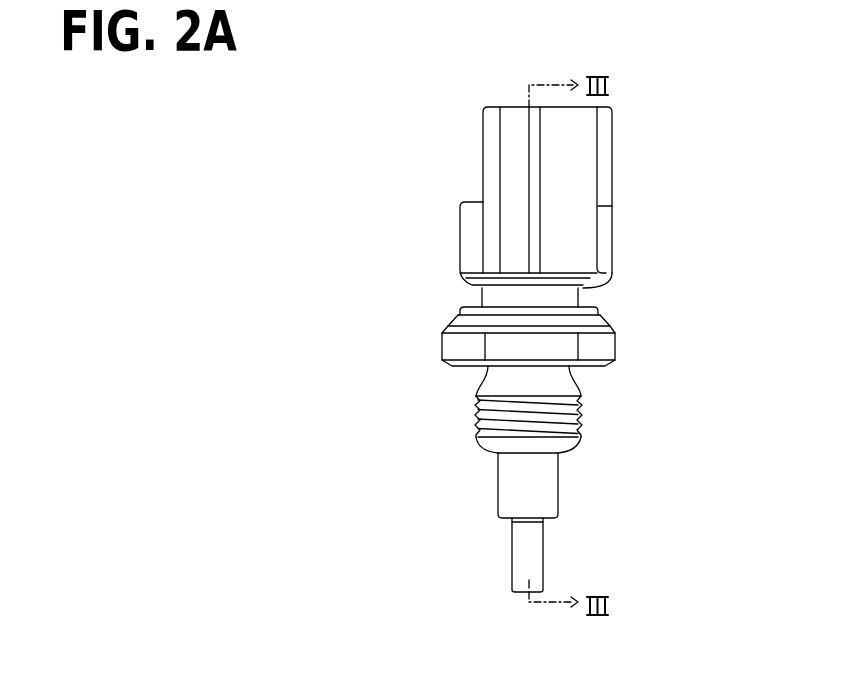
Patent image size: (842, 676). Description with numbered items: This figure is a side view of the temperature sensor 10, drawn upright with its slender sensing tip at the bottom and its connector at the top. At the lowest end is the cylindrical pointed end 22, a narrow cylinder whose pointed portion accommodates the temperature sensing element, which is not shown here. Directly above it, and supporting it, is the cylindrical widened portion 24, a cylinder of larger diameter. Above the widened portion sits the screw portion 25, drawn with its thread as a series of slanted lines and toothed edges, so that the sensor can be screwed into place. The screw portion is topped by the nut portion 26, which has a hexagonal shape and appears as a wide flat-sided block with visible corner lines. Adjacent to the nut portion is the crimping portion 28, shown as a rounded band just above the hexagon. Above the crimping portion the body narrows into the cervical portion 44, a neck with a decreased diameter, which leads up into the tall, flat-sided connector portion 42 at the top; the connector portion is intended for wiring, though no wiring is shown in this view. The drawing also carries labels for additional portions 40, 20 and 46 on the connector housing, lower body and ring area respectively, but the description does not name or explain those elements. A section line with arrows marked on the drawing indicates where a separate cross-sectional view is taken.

The temperature sensor 10 is at (470, 101).
The connector housing 40 is at (483, 148).
The connector portion 42 is at (612, 206).
The cervical portion 44 is at (610, 276).
The crimping portion 28 is at (460, 307).
The ring portion 46 is at (600, 313).
The nut portion 26 is at (595, 356).
The sensor body 20 is at (498, 465).
The screw portion 25 is at (580, 420).
The cylindrical widened portion 24 is at (558, 483).
The cylindrical pointed end 22 is at (543, 553).